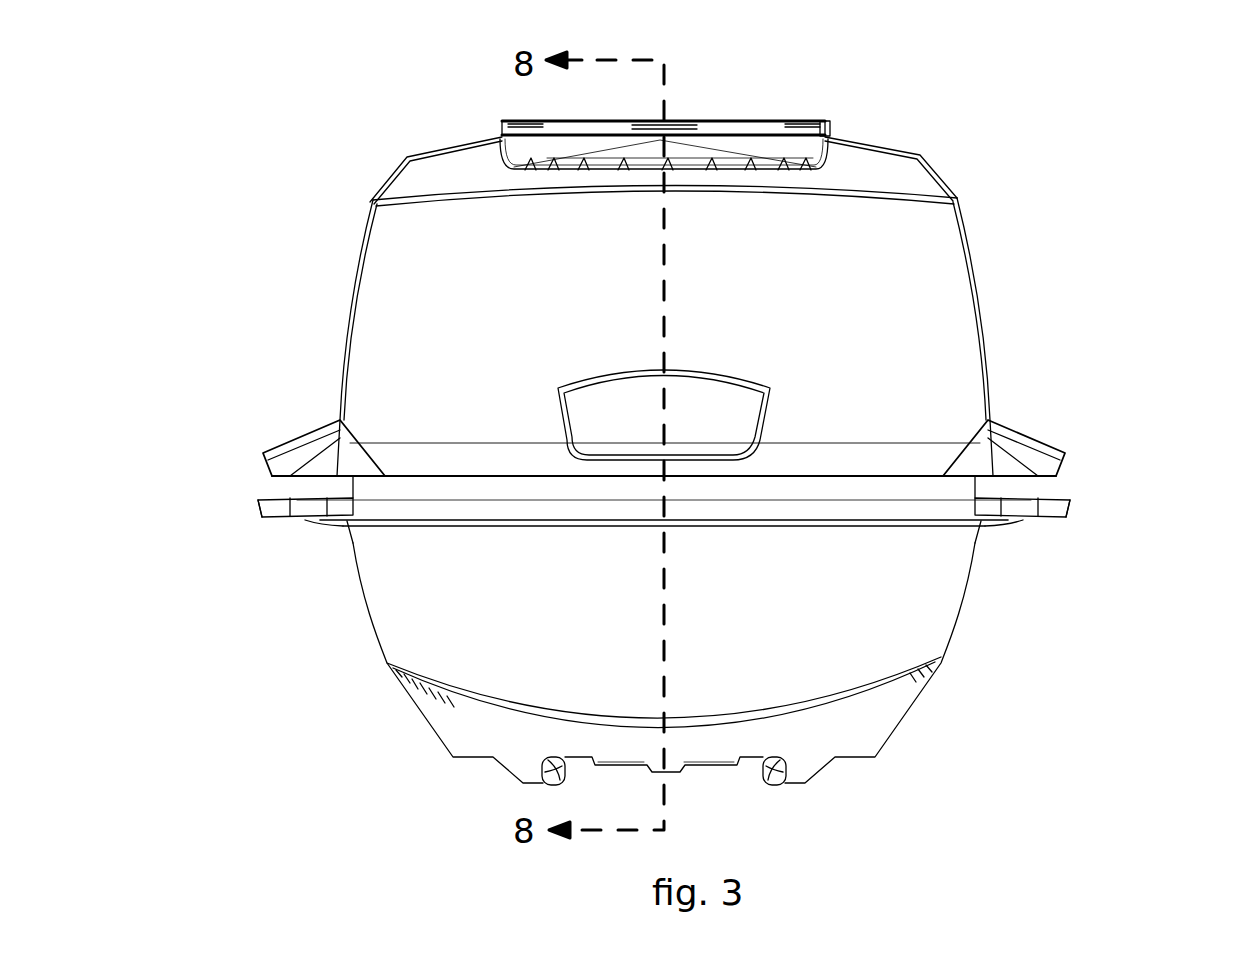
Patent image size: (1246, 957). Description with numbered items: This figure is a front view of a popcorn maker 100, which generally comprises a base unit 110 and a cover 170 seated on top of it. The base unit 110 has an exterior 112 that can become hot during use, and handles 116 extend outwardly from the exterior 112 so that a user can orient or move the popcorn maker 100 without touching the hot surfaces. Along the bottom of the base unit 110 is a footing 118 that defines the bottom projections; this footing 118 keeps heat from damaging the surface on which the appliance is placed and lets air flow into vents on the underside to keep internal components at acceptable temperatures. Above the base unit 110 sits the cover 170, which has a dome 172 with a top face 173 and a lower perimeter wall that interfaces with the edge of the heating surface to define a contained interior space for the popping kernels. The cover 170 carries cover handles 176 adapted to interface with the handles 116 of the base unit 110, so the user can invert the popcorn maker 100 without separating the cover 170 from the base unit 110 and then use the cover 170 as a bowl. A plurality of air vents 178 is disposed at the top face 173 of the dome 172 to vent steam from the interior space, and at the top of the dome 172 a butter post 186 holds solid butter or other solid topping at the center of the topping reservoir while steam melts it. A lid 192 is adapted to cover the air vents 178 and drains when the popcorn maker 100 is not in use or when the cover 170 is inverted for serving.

The popcorn maker 100 is at (308, 280).
The base unit 110 is at (972, 595).
The exterior 112 is at (372, 628).
The handles 116 is at (308, 527).
The footing 118 is at (793, 787).
The cover 170 is at (988, 337).
The dome 172 is at (967, 230).
The top face 173 is at (445, 148).
The cover handles 176 is at (1040, 430).
The air vents 178 is at (505, 162).
The butter post 186 is at (567, 121).
The lid 192 is at (827, 127).